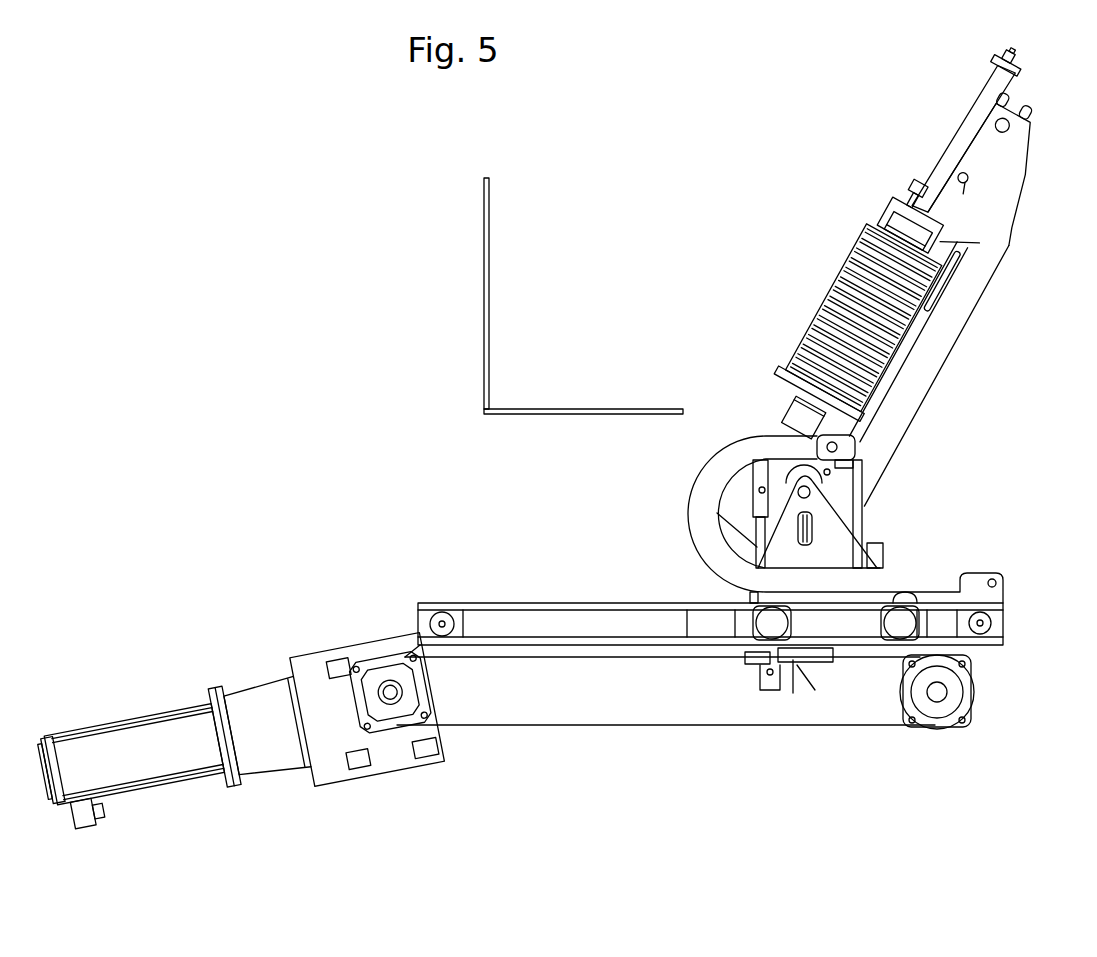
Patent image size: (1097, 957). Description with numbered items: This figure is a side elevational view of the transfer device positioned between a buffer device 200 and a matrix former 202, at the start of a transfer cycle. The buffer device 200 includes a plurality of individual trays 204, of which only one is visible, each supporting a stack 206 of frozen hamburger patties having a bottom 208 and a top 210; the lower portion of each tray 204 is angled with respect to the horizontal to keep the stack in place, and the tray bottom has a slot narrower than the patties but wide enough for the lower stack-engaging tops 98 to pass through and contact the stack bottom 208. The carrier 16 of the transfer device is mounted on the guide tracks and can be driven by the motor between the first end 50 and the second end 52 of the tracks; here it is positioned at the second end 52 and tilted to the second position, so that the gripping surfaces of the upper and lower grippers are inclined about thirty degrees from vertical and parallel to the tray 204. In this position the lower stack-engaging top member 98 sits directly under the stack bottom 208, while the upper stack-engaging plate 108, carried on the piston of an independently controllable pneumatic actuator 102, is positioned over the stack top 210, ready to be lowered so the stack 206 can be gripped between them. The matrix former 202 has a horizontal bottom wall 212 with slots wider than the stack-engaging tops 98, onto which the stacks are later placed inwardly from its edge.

The carrier 16 is at (915, 457).
The first end 50 is at (401, 589).
The second end 52 is at (1034, 612).
The stack-engaging top portion 98 is at (798, 413).
The pneumatic actuator 102 is at (963, 121).
The stack-engaging plate member 108 is at (980, 243).
The buffer device 200 is at (947, 260).
The matrix former 202 is at (484, 366).
The tray 204 is at (873, 396).
The stack of frozen hamburger patties 206 is at (818, 266).
The stack bottom 208 is at (780, 377).
The stack top 210 is at (870, 225).
The bottom wall 212 is at (518, 416).